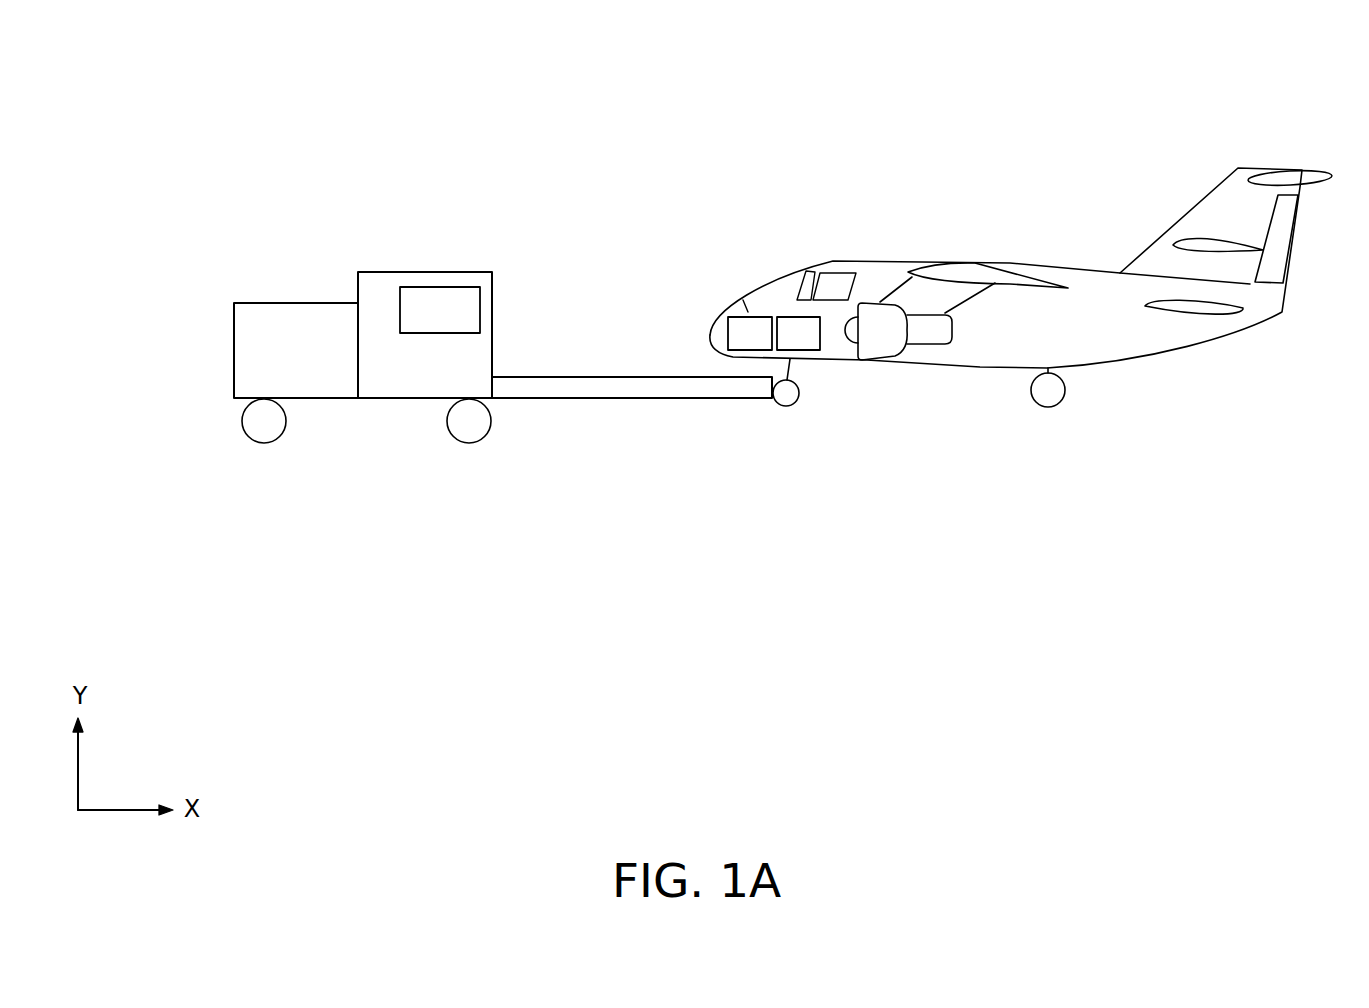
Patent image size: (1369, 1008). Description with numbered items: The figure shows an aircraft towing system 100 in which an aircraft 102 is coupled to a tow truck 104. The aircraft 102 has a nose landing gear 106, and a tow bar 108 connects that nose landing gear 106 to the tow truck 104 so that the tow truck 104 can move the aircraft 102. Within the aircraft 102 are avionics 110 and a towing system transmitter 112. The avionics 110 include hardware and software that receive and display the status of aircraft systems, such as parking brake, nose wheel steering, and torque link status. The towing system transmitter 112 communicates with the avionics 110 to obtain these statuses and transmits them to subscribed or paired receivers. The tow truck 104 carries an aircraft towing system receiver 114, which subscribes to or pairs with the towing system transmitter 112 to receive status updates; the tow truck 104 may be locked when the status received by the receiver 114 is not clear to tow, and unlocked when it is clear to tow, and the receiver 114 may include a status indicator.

The aircraft towing system 100 is at (194, 110).
The aircraft 102 is at (999, 218).
The tow truck 104 is at (199, 300).
The nose landing gear 106 is at (822, 401).
The tow bar 108 is at (580, 382).
The avionics 110 is at (733, 346).
The towing system transmitter 112 is at (781, 346).
The aircraft towing system receiver 114 is at (452, 320).